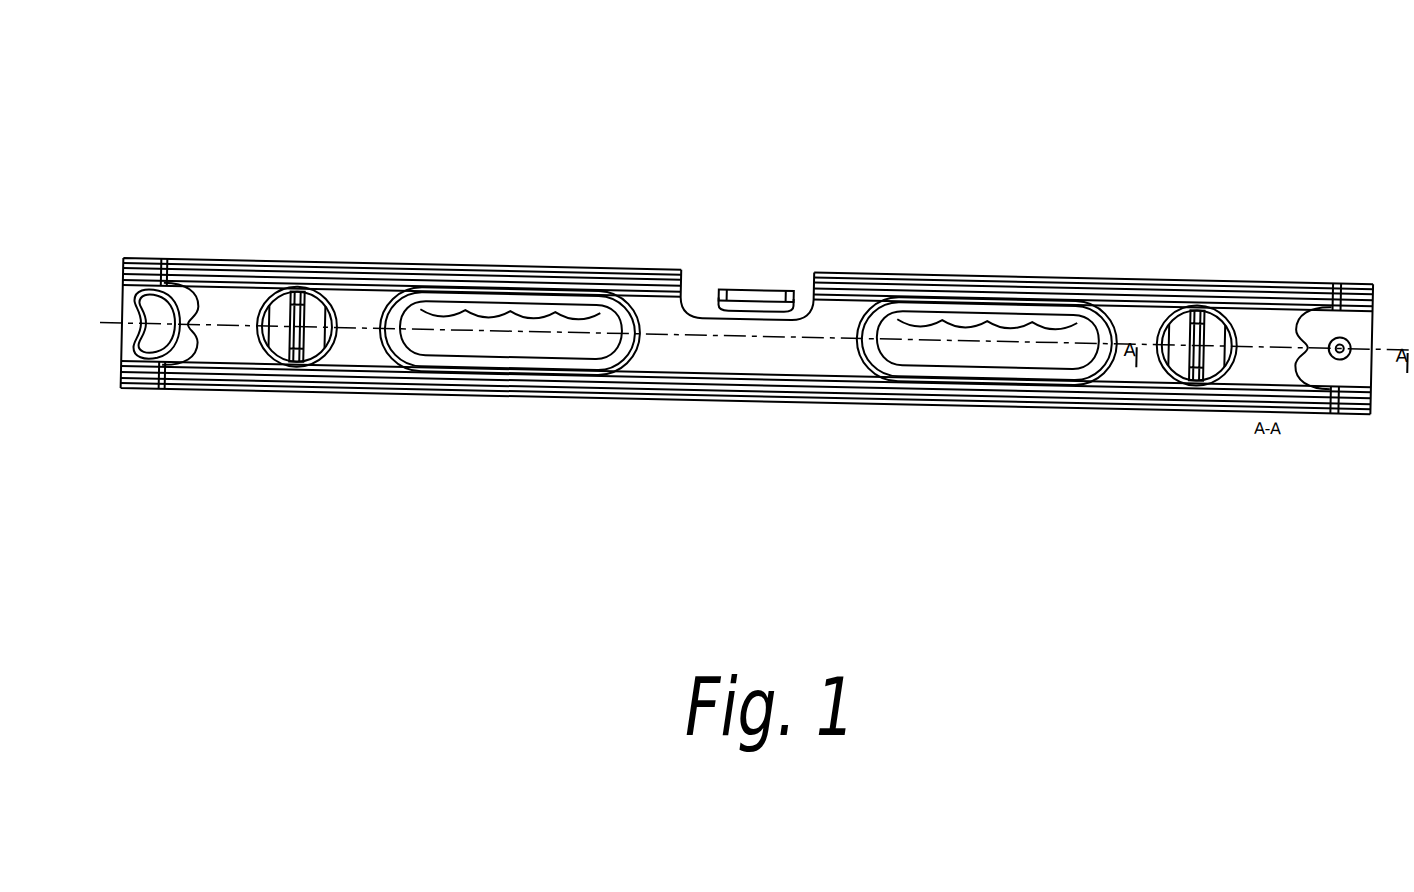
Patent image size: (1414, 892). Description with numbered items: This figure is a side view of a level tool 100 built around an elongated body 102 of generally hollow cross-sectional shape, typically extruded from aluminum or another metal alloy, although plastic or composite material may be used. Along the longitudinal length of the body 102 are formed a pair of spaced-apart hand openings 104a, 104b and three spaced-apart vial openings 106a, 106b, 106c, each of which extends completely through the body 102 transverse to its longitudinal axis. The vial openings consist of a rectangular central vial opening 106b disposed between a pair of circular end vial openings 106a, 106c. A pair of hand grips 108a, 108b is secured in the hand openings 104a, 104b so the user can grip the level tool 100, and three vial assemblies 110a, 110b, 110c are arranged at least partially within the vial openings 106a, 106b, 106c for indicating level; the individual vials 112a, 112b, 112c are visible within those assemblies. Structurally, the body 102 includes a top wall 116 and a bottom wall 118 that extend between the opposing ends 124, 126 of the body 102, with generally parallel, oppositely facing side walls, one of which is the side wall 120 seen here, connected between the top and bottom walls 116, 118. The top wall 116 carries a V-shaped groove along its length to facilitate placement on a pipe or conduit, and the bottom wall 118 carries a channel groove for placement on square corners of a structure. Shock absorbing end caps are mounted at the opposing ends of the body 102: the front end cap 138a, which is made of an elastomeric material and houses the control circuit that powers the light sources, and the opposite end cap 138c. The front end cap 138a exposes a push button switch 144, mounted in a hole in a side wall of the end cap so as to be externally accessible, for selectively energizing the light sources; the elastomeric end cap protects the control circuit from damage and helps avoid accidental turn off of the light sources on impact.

The level tool 100 is at (694, 65).
The elongated body 102 is at (746, 350).
The hand opening 104a is at (1045, 355).
The hand opening 104b is at (462, 343).
The circular end vial opening 106a is at (1170, 350).
The rectangular central vial opening 106b is at (768, 286).
The circular end vial opening 106c is at (326, 336).
The hand grip 108a is at (937, 317).
The hand grip 108b is at (598, 357).
The vial assembly 110a is at (1178, 304).
The vial assembly 110b is at (727, 283).
The vial assembly 110c is at (283, 297).
The vial 112a is at (1210, 330).
The vial 112b is at (744, 293).
The vial 112c is at (305, 307).
The top wall 116 is at (449, 266).
The bottom wall 118 is at (487, 393).
The side wall 120 is at (762, 361).
The end of the body 124 is at (197, 340).
The end of the body 126 is at (1300, 355).
The front end cap 138a is at (1346, 327).
The shock absorbing end cap 138c is at (132, 357).
The switch 144 is at (1339, 355).